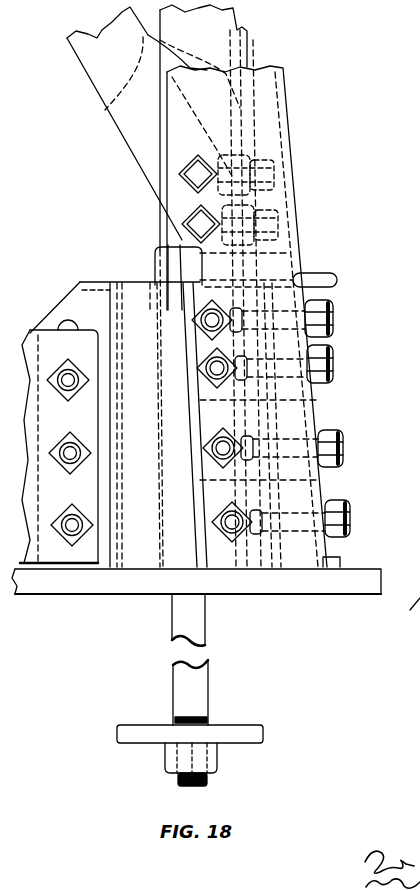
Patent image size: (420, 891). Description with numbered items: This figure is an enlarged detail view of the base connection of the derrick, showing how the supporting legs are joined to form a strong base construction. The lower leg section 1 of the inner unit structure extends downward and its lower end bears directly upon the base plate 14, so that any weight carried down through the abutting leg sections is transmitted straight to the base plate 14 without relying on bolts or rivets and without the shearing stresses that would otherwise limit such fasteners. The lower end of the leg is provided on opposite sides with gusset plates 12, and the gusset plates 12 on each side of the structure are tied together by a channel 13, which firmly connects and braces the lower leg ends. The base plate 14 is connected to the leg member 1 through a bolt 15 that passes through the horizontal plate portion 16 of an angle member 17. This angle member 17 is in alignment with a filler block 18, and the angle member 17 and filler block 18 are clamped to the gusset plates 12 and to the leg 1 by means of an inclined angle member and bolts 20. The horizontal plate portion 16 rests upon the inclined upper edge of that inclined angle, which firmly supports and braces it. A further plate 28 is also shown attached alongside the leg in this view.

The lower leg section 1 is at (225, 50).
The gusset plate 12 is at (85, 282).
The channel 13 is at (30, 332).
The base plate 14 is at (360, 585).
The bolt 15 is at (200, 687).
The horizontal plate portion 16 is at (138, 280).
The angle member 17 is at (247, 283).
The filler block 18 is at (263, 427).
The bolt 20 is at (408, 548).
The splice plate 28 is at (280, 107).